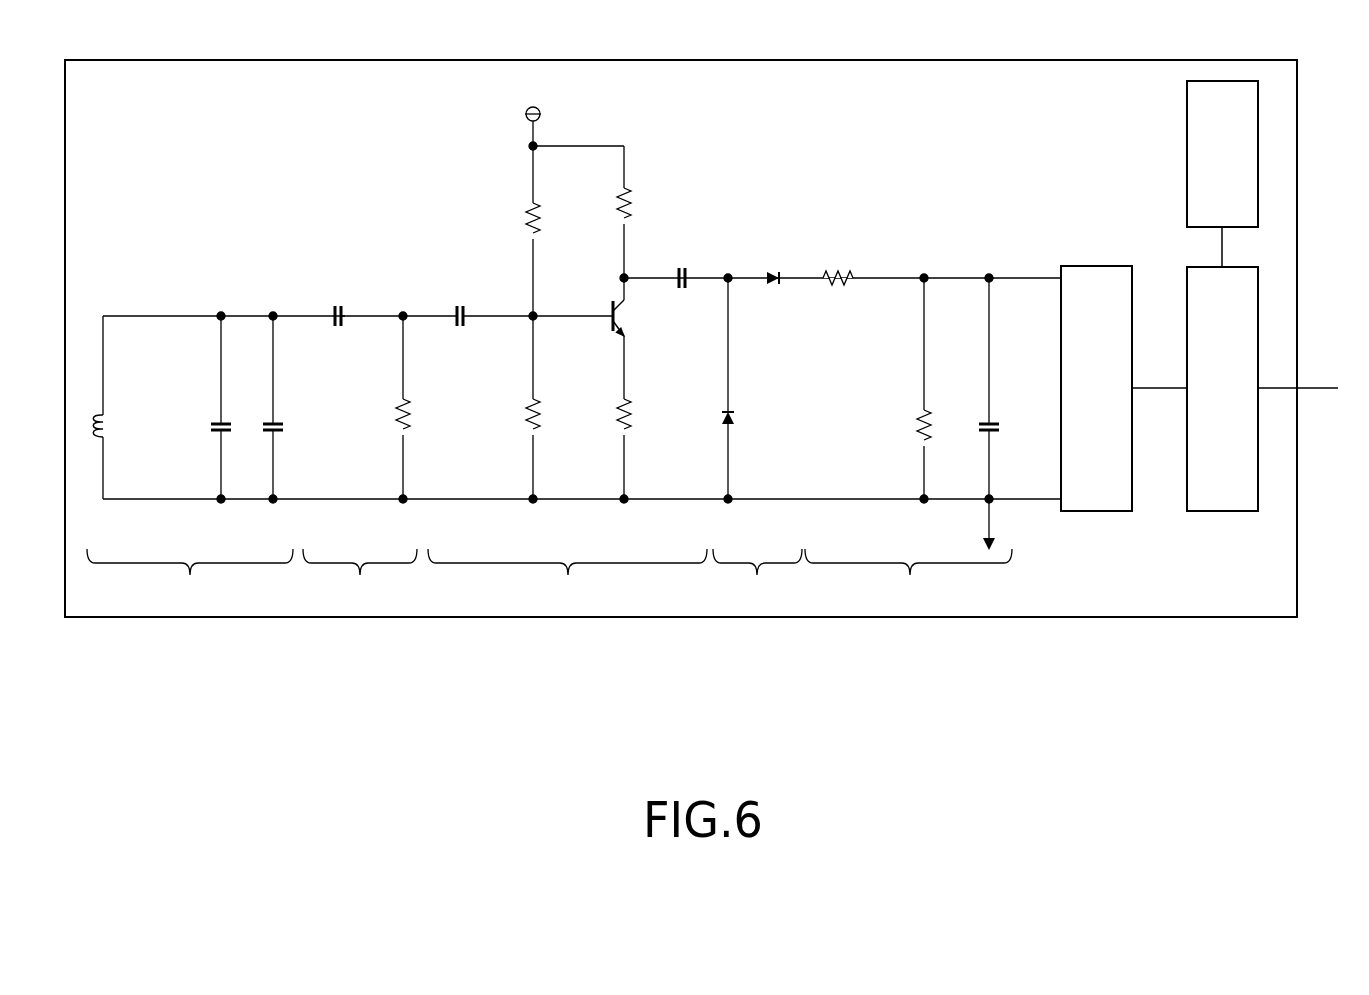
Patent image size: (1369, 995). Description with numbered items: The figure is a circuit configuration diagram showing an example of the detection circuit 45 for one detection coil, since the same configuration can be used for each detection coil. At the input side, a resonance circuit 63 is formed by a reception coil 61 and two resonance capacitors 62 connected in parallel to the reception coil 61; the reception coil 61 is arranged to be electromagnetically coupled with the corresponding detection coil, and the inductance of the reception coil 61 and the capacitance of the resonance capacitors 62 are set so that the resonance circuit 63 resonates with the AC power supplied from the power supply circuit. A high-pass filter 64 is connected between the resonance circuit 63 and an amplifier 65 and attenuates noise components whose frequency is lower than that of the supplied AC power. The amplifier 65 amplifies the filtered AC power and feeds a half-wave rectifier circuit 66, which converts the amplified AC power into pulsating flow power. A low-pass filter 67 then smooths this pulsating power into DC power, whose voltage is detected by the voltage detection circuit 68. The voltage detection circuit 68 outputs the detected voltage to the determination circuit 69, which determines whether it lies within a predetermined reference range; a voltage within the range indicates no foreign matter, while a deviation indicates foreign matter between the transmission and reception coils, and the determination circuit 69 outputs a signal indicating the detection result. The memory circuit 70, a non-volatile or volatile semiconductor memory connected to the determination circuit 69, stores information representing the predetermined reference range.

The detection circuit 45 is at (1208, 680).
The reception coil 61 is at (108, 430).
The resonance capacitor 62 is at (215, 421).
The resonance circuit 63 is at (216, 464).
The high-pass filter 64 is at (360, 459).
The amplifier 65 is at (555, 360).
The half-wave rectifier circuit 66 is at (740, 440).
The low-pass filter 67 is at (889, 442).
The voltage detection circuit 68 is at (1097, 511).
The determination circuit 69 is at (1222, 511).
The memory circuit 70 is at (1187, 150).